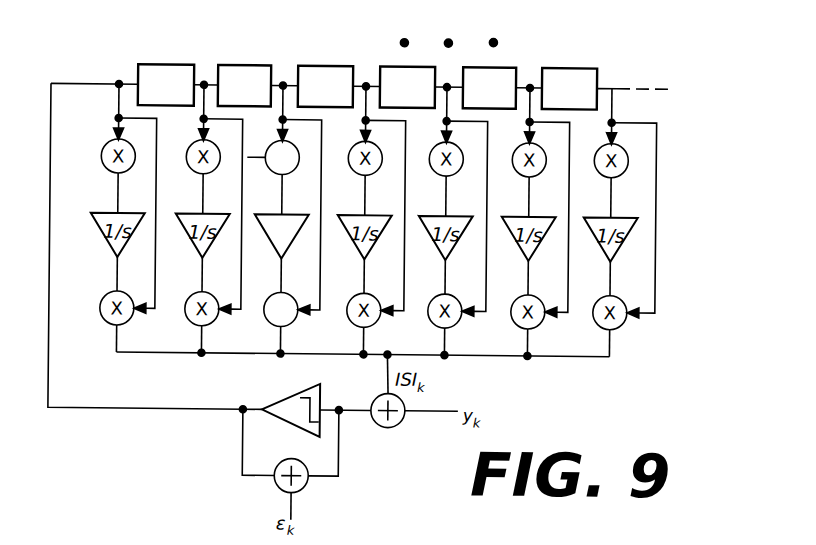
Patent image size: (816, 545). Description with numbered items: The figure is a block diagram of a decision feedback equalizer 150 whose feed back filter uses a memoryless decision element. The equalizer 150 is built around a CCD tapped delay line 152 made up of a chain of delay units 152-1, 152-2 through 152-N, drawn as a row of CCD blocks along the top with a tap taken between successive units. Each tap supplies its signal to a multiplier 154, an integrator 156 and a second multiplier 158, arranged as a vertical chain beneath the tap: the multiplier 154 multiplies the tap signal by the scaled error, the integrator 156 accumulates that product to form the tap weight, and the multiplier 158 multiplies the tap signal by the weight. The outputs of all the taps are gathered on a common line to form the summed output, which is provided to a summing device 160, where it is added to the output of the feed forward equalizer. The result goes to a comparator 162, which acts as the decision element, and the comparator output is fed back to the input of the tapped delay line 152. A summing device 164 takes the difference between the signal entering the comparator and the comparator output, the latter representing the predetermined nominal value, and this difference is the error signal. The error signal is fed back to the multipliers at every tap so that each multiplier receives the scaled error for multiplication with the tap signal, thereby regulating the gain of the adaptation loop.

The decision feedback equalizer 150 is at (396, 193).
The CCD tapped delay line 152 is at (360, 67).
The delay unit 152-1 is at (177, 46).
The delay unit 152-2 is at (253, 64).
The delay unit 152-N is at (569, 64).
The multiplier 154 is at (270, 168).
The integrator 156 is at (272, 245).
The multiplier 158 is at (294, 320).
The summing device 160 is at (400, 423).
The comparator 162 is at (292, 396).
The summing device 164 is at (310, 481).